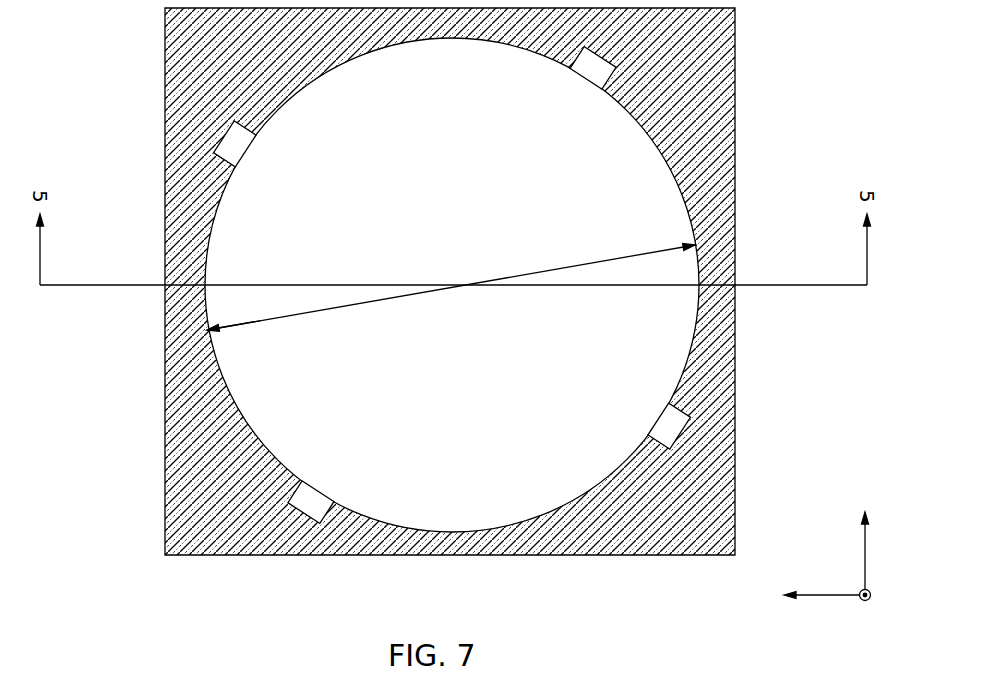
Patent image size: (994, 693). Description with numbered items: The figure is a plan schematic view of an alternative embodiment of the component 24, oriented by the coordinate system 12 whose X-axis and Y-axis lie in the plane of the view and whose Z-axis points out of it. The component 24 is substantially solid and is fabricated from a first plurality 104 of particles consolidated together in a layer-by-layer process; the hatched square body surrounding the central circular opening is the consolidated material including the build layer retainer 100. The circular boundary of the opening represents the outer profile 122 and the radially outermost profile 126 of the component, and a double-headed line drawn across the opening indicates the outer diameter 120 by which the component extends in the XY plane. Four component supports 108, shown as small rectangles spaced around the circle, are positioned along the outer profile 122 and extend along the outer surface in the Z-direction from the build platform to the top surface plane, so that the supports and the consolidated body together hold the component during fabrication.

The build layer retainer 100 is at (715, 209).
The first plurality of particles 104 is at (212, 78).
The component supports 108 is at (308, 122).
The component 24 is at (232, 238).
The outer diameter 120 is at (573, 265).
The outer profile 122 is at (147, 345).
The radially outermost profile 126 is at (206, 332).
The coordinate system 12 is at (832, 559).